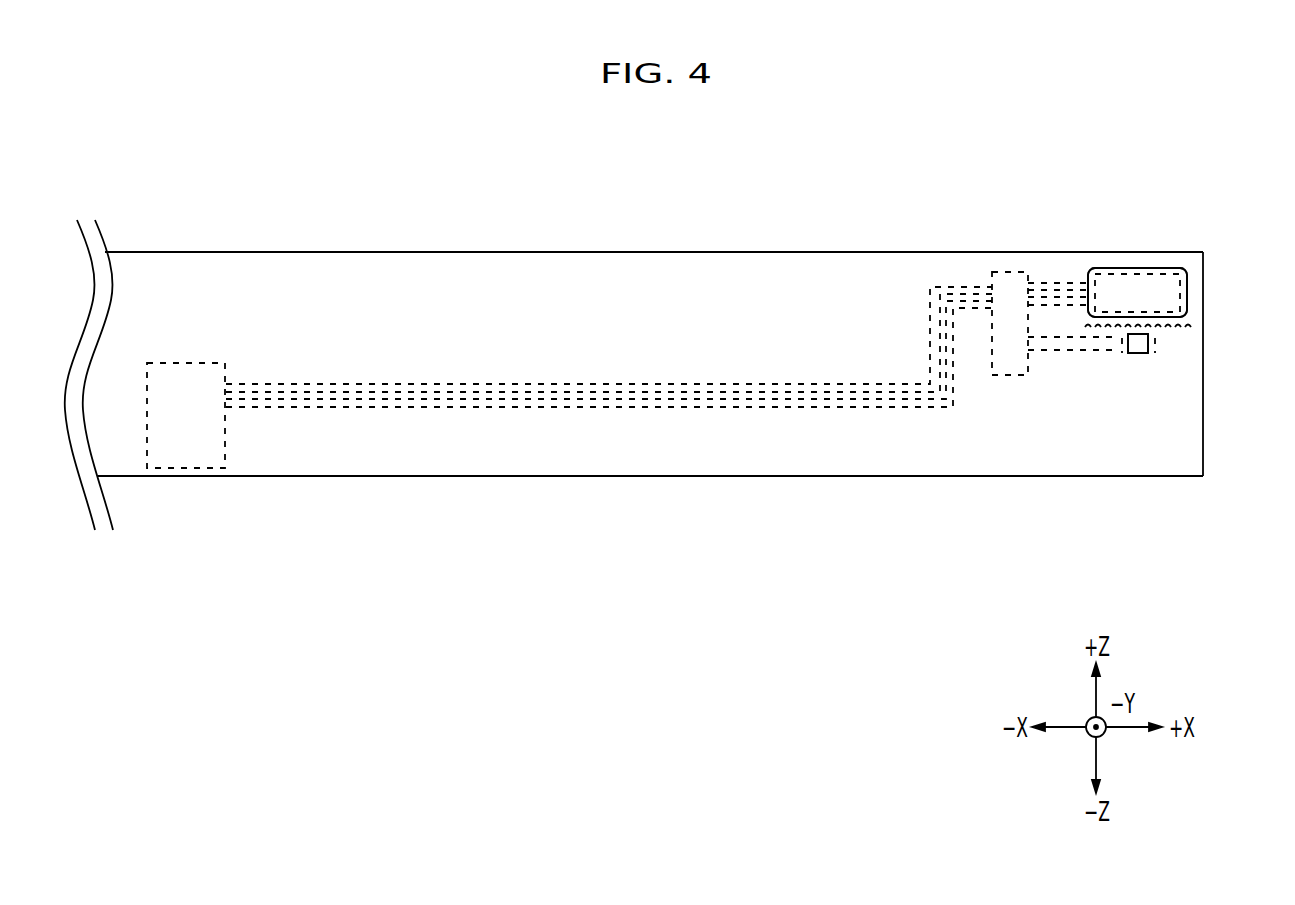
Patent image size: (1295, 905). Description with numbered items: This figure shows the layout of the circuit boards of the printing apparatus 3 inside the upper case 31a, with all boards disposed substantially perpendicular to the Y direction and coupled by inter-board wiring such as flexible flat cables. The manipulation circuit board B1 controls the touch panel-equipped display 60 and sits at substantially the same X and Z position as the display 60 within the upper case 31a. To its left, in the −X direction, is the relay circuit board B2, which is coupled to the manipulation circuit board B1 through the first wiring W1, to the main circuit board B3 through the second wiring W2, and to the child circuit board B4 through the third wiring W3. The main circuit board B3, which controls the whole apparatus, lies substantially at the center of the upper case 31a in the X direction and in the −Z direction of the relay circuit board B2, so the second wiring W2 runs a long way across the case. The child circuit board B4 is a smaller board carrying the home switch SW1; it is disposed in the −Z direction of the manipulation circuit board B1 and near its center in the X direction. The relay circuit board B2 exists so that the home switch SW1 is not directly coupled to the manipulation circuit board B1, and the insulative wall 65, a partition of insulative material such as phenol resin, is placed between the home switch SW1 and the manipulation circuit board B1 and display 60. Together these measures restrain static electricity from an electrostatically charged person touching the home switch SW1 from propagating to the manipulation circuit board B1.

The housing 3 is at (634, 328).
The upper case 31a is at (882, 270).
The manipulation circuit board B1 is at (1128, 270).
The relay circuit board B2 is at (1008, 268).
The main circuit board B3 is at (187, 362).
The child circuit board B4 is at (1150, 356).
The first wiring W1 is at (1068, 275).
The second wiring W2 is at (628, 370).
The third wiring W3 is at (1098, 362).
The home switch SW1 is at (1150, 350).
The touch panel-equipped display 60 is at (1187, 289).
The insulative wall 65 is at (1195, 325).